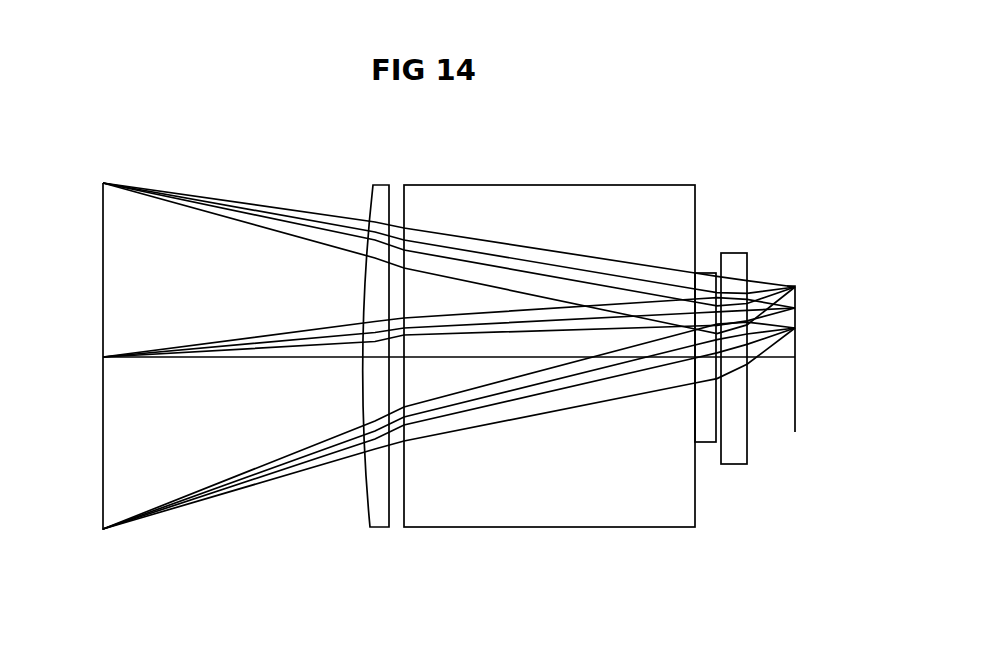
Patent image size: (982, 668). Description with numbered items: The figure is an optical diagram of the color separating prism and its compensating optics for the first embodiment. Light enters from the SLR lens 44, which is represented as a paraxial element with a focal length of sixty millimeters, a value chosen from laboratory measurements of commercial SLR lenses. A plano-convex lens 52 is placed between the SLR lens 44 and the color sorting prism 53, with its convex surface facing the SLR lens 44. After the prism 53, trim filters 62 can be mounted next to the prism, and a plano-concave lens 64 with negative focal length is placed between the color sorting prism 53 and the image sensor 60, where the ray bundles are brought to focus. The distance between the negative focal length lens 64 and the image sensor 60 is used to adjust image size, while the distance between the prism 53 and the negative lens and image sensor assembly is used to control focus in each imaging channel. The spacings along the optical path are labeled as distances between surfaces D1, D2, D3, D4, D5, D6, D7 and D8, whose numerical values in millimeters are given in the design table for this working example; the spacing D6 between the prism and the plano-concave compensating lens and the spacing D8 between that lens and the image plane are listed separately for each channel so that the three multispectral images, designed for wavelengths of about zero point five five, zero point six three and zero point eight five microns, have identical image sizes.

The SLR lens 44 is at (103, 407).
The plano-convex lens 52 is at (371, 199).
The color sorting prism 53 is at (479, 188).
The trim filters 62 is at (703, 273).
The plano-concave lens 64 is at (747, 253).
The image sensor 60 is at (797, 380).
The distance between surfaces D1 is at (208, 360).
The distance between surfaces D2 is at (290, 468).
The distance between surfaces D3 is at (404, 362).
The distance between surfaces D4 is at (480, 360).
The distance between surfaces D5 is at (683, 365).
The spacing between prism and plano-concave compensating lens D6 is at (716, 362).
The distance between surfaces D7 is at (741, 362).
The spacing between plano-concave compensating lens and image plane D8 is at (758, 362).